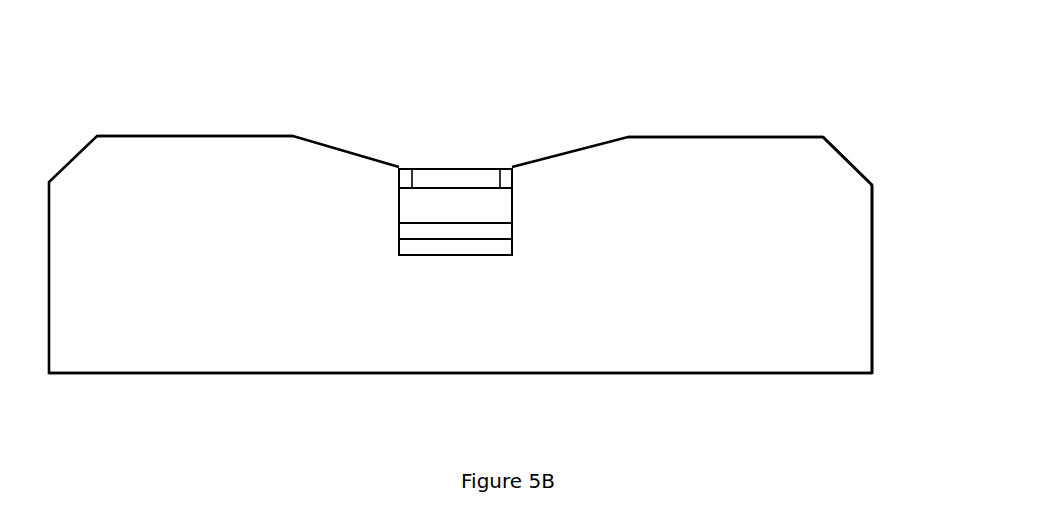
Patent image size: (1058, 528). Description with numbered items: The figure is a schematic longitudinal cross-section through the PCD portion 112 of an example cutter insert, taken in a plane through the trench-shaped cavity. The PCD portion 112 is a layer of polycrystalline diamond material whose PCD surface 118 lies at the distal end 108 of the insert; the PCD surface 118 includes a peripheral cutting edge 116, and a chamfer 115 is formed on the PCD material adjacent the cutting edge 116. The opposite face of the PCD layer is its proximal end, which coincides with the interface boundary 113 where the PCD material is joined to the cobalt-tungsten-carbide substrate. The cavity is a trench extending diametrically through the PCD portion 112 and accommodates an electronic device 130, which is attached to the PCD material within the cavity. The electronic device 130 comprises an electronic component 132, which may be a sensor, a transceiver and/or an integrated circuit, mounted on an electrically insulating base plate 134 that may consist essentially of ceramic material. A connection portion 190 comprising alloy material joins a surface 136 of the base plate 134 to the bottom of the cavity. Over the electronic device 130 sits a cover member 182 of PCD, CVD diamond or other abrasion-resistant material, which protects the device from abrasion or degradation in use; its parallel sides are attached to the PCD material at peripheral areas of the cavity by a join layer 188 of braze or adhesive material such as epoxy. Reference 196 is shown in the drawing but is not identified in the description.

The distal end 108 is at (797, 130).
The PCD portion 112 is at (850, 290).
The interface boundary 113 is at (815, 382).
The chamfer 115 is at (845, 157).
The cutting edge 116 is at (823, 136).
The PCD surface 118 is at (142, 122).
The electronic device 130 is at (217, 84).
The electronic component 132 is at (432, 207).
The base plate 134 is at (413, 233).
The surface of the base plate 136 is at (433, 239).
The cover member 182 is at (452, 177).
The join layer 188 is at (505, 177).
The connection portion 190 is at (498, 247).
The bottom layer 196 is at (480, 255).